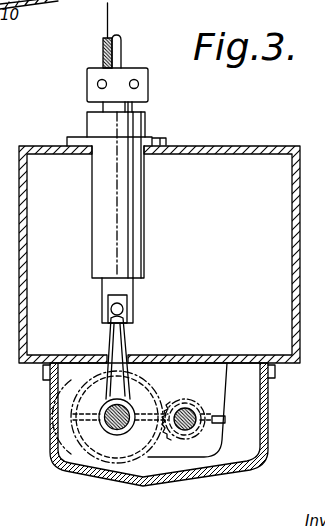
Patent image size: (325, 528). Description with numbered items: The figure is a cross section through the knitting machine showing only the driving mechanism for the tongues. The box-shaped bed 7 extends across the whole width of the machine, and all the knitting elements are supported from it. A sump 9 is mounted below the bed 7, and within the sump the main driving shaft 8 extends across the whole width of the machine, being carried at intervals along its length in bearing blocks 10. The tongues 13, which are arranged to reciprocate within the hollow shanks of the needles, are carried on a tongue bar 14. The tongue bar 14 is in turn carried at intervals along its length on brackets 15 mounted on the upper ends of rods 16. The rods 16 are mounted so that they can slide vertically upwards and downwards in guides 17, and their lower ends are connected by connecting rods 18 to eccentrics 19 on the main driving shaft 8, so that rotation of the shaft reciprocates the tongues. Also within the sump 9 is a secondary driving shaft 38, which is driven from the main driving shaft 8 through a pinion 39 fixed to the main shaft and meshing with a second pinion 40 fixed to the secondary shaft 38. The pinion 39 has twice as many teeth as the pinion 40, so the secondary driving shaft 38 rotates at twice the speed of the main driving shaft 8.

The box-shaped bed 7 is at (293, 302).
The main driving shaft 8 is at (117, 433).
The sump 9 is at (268, 420).
The bearing blocks 10 is at (210, 385).
The tongues 13 is at (109, 17).
The tongue bar 14 is at (104, 57).
The brackets 15 is at (148, 78).
The rods 16 is at (132, 106).
The guides 17 is at (133, 230).
The connecting rods 18 is at (121, 342).
The eccentrics 19 is at (105, 424).
The secondary driving shaft 38 is at (197, 428).
The pinion 39 is at (73, 441).
The second pinion 40 is at (172, 432).